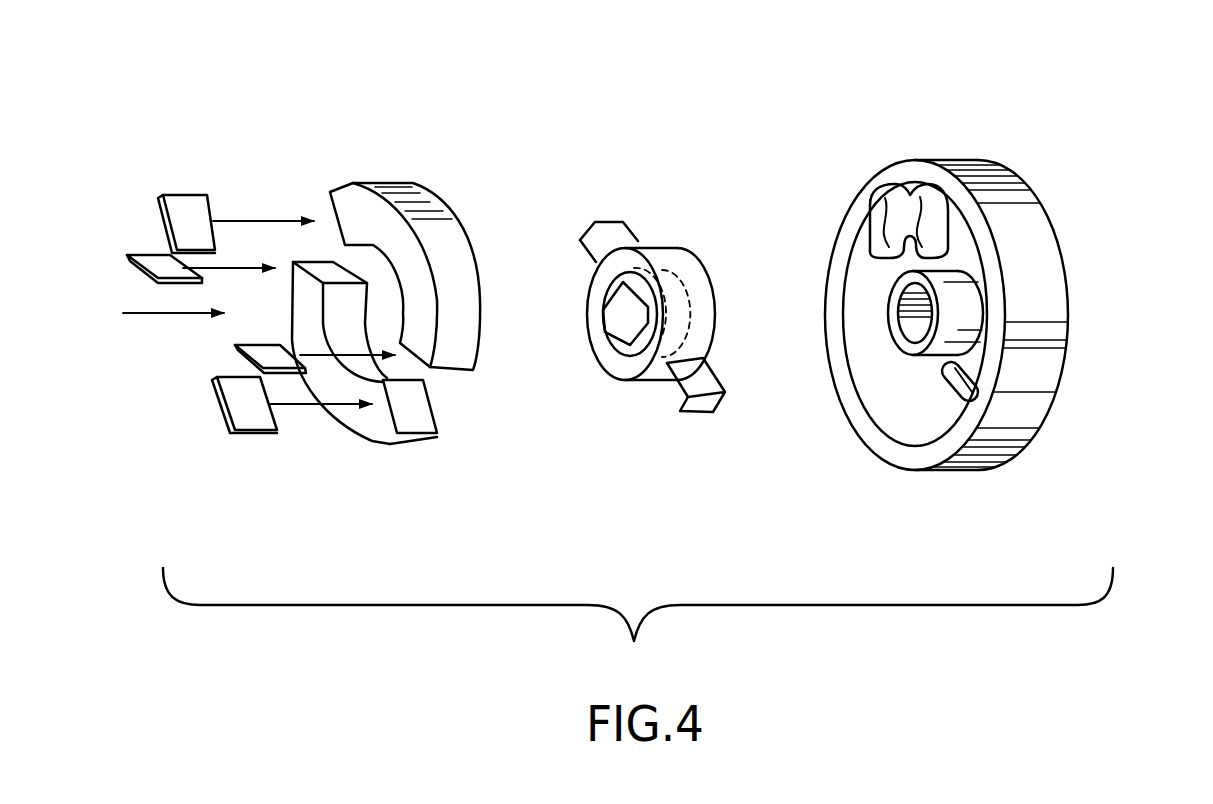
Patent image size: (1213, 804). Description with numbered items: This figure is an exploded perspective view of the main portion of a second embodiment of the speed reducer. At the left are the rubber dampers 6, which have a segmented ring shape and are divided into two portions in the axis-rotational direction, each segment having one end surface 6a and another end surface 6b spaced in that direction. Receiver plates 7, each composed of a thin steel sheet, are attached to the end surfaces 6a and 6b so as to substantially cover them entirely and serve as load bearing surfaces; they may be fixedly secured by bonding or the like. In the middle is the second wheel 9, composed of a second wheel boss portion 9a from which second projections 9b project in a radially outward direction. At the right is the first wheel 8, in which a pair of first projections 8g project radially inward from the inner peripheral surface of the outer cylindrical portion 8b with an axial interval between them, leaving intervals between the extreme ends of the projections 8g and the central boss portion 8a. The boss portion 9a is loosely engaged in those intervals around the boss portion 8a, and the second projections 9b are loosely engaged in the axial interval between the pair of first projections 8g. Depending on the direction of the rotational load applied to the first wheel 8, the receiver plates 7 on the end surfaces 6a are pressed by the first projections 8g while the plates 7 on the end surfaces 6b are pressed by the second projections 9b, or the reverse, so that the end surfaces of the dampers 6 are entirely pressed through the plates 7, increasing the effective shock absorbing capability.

The rubber damper 6 is at (438, 156).
The end surface 6a is at (413, 415).
The end surface 6b is at (320, 270).
The receiver plate 7 is at (152, 263).
The first wheel 8 is at (1010, 278).
The central boss portion 8a is at (967, 325).
The outer cylindrical portion 8b is at (998, 290).
The first projections 8g is at (908, 272).
The second wheel 9 is at (686, 233).
The second wheel boss portion 9a is at (679, 253).
The second projections 9b is at (615, 236).